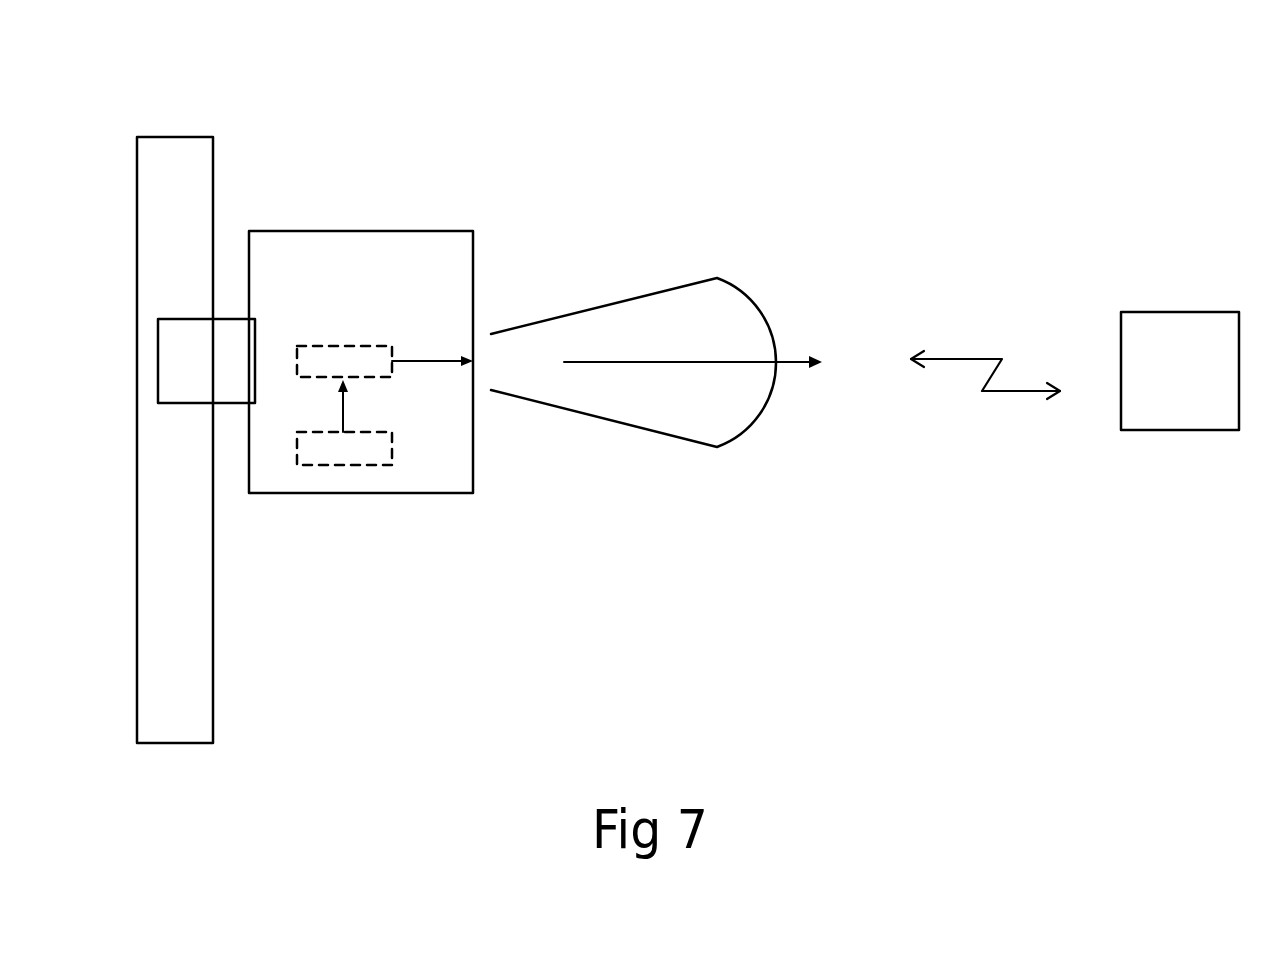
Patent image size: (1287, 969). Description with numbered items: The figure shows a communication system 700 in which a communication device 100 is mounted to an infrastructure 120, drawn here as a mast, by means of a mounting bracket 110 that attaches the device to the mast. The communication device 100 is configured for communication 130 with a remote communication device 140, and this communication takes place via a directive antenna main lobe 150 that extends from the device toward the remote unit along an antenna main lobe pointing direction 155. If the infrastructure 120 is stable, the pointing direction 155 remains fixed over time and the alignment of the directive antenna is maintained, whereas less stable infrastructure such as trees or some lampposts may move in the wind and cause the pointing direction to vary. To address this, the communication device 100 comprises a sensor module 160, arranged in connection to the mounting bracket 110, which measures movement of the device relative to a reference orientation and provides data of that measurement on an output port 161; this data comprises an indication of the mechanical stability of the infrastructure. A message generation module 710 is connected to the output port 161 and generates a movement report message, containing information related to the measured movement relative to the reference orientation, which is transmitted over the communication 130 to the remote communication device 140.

The communication system 700 is at (1160, 138).
The infrastructure 120 is at (177, 134).
The mounting bracket 110 is at (158, 382).
The communication device 100 is at (360, 493).
The message generation module 710 is at (297, 360).
The sensor module 160 is at (392, 440).
The output port 161 is at (363, 406).
The directive antenna main lobe 150 is at (747, 264).
The antenna main lobe pointing direction 155 is at (704, 345).
The communication 130 is at (985, 360).
The remote communication device 140 is at (1180, 430).